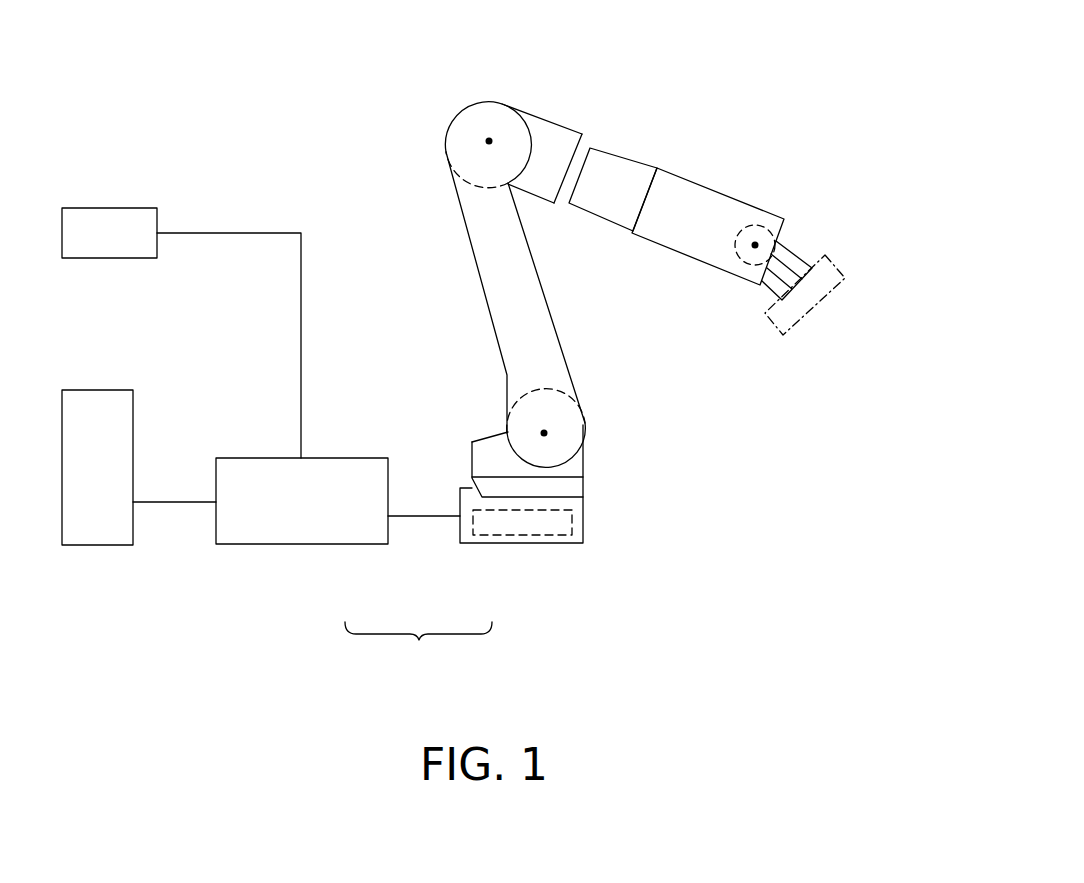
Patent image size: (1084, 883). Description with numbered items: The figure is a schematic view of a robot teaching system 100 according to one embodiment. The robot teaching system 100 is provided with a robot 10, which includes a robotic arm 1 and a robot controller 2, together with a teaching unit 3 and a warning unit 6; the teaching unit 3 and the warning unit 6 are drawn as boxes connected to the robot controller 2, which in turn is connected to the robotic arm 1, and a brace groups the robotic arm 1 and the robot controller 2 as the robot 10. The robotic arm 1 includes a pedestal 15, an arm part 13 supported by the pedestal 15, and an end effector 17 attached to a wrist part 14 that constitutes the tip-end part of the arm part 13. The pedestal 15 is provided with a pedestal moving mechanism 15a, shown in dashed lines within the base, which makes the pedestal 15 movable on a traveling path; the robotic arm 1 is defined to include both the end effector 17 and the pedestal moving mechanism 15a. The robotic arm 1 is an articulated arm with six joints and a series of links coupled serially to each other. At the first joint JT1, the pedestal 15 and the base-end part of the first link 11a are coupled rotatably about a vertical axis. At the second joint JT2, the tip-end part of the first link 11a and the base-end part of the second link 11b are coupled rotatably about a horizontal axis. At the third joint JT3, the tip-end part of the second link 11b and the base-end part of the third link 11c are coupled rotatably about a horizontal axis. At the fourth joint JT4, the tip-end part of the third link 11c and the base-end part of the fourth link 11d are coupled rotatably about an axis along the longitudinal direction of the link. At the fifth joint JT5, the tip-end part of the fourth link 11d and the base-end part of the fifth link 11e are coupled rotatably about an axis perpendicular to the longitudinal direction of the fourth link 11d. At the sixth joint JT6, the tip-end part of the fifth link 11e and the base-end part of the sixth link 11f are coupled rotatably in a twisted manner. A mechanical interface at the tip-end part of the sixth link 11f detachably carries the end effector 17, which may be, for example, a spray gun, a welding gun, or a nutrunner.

The robot teaching system 100 is at (145, 98).
The warning unit 6 is at (100, 207).
The teaching unit 3 is at (100, 390).
The robot controller 2 is at (315, 547).
The robotic arm 1 is at (518, 550).
The robot 10 is at (399, 566).
The pedestal 15 is at (472, 486).
The pedestal moving mechanism 15a is at (587, 522).
The first link 11a is at (483, 432).
The first joint JT1 is at (585, 483).
The second joint JT2 is at (565, 437).
The second link 11b is at (479, 281).
The arm part 13 is at (465, 231).
The third joint JT3 is at (472, 126).
The third link 11c is at (545, 117).
The fourth joint JT4 is at (588, 148).
The fourth link 11d is at (698, 182).
The wrist part 14 is at (675, 254).
The fifth joint JT5 is at (757, 222).
The fifth link 11e is at (793, 232).
The sixth link 11f is at (767, 287).
The sixth joint JT6 is at (806, 234).
The end effector 17 is at (835, 262).